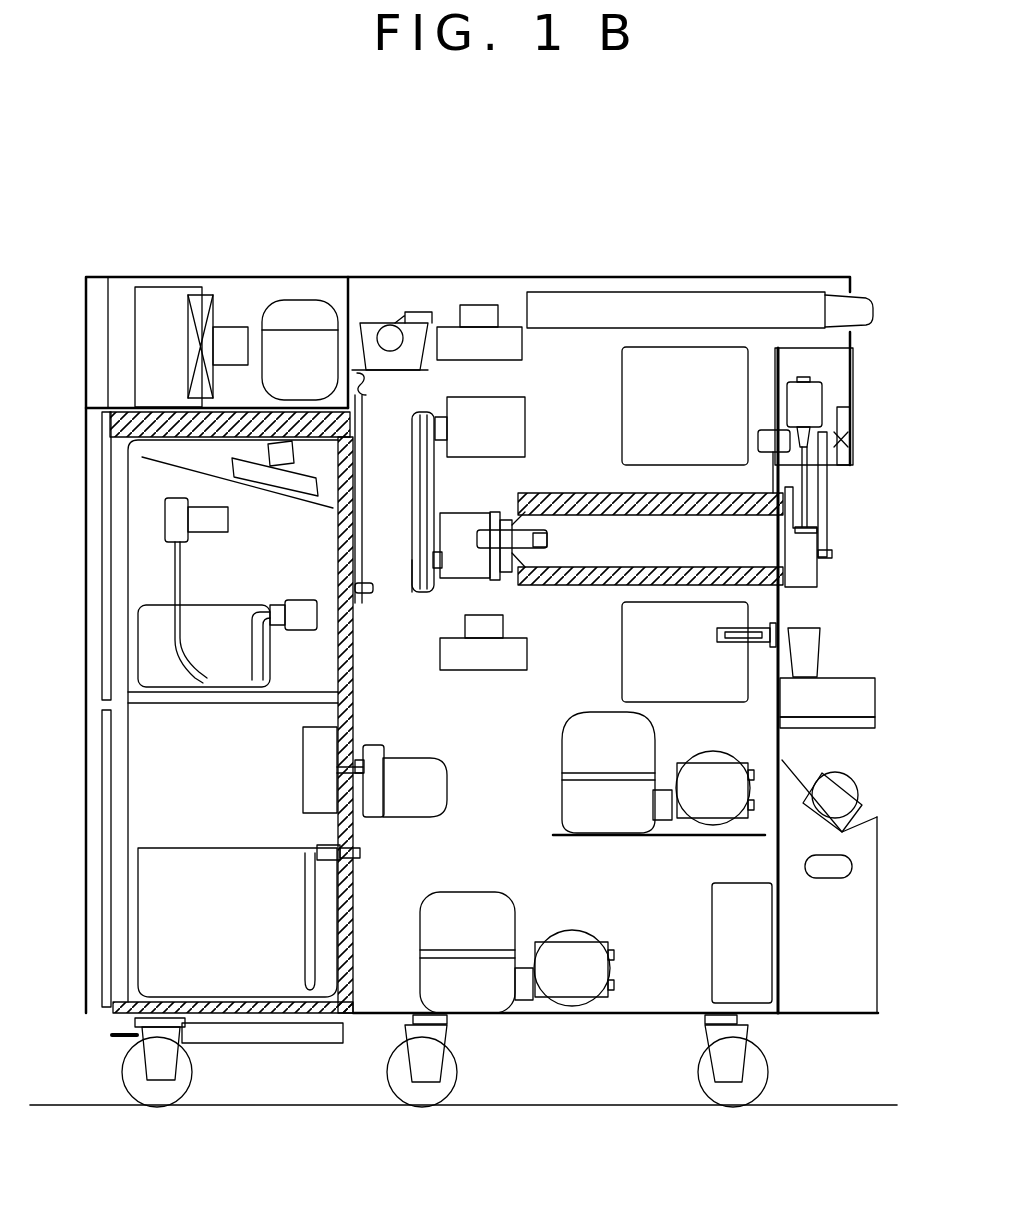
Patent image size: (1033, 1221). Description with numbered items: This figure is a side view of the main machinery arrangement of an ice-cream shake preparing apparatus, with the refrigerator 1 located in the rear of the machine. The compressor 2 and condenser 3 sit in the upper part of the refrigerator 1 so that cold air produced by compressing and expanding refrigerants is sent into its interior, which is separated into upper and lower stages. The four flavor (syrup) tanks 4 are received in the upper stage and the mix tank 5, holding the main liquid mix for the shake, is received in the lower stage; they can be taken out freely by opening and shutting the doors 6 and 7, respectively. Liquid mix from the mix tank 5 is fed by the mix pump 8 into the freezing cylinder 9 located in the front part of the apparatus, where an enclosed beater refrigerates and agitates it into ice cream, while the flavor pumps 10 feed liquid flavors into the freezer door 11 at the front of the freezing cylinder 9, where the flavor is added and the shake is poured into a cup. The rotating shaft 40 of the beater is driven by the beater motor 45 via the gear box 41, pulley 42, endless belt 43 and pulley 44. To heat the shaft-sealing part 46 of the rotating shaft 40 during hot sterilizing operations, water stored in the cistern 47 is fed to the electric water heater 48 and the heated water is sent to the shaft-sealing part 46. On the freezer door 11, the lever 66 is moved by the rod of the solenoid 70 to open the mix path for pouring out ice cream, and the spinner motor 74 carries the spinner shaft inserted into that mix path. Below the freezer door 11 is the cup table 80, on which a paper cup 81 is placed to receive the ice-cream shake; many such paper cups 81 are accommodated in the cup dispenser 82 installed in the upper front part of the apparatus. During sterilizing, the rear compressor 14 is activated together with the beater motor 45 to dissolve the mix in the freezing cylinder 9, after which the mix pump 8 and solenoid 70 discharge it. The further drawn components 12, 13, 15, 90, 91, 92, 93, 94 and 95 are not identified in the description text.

The refrigerator 1 is at (263, 277).
The compressor 2 is at (318, 277).
The condenser 3 is at (178, 277).
The flavor (syrup) tank 4 is at (137, 623).
The mix tank 5 is at (137, 895).
The door 6 is at (88, 514).
The door 7 is at (88, 782).
The mix pump 8 is at (405, 757).
The freezing cylinder 9 is at (573, 493).
The flavor pump 10 is at (228, 520).
The freezer door 11 is at (818, 573).
The compressor 12 is at (583, 712).
The receiver tank 13 is at (702, 750).
The rear compressor 14 is at (495, 892).
The receiver tank 15 is at (582, 930).
The rotating shaft 40 is at (478, 513).
The gear box 41 is at (457, 578).
The pulley 42 is at (412, 573).
The endless belt 43 is at (410, 470).
The pulley 44 is at (410, 423).
The beater motor 45 is at (490, 397).
The shaft-sealing part 46 is at (540, 585).
The cistern 47 is at (371, 323).
The electric water heater 48 is at (372, 568).
The lever 66 is at (828, 487).
The solenoid 70 is at (765, 452).
The spinner motor 74 is at (822, 390).
The cup table 80 is at (812, 688).
The paper cup 81 is at (865, 297).
The cup dispenser 82 is at (812, 277).
The control box 90 is at (622, 360).
The control box 91 is at (622, 650).
The pump unit 92 is at (483, 363).
The pump unit 93 is at (453, 672).
The panel 94 is at (710, 897).
The cup holder 95 is at (878, 822).